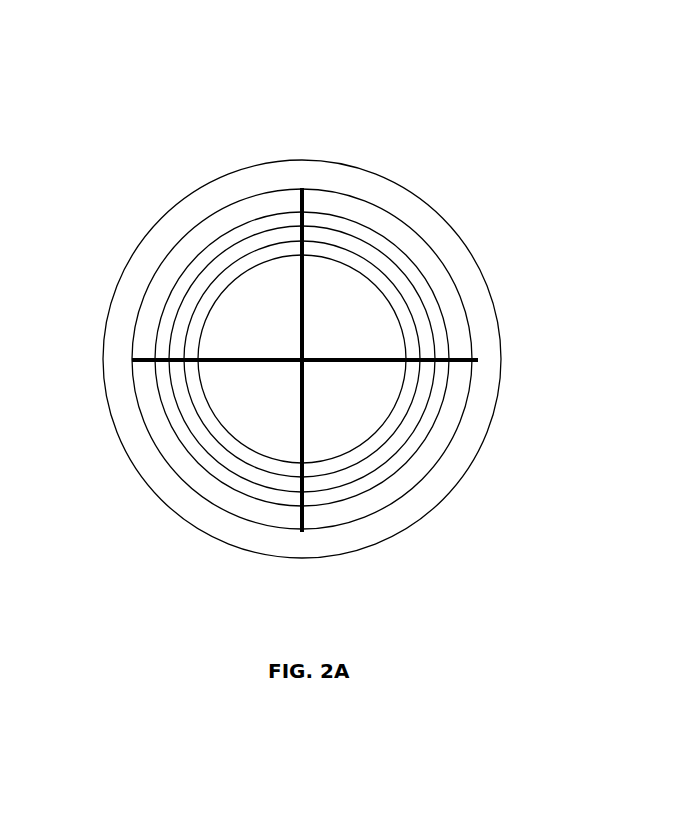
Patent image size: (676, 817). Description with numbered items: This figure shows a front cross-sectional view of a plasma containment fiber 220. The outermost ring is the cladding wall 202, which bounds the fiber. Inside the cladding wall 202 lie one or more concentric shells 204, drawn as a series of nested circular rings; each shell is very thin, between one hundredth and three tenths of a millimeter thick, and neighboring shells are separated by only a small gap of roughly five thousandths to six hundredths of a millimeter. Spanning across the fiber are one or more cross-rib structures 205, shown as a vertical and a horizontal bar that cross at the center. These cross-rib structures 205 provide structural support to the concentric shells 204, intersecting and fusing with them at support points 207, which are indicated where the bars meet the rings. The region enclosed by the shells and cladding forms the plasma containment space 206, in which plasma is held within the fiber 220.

The plasma containment fiber 220 is at (297, 105).
The cladding wall 202 is at (422, 213).
The concentric shells 204 is at (397, 473).
The cross-rib structures 205 is at (303, 200).
The plasma containment space 206 is at (445, 432).
The support points 207 is at (155, 358).